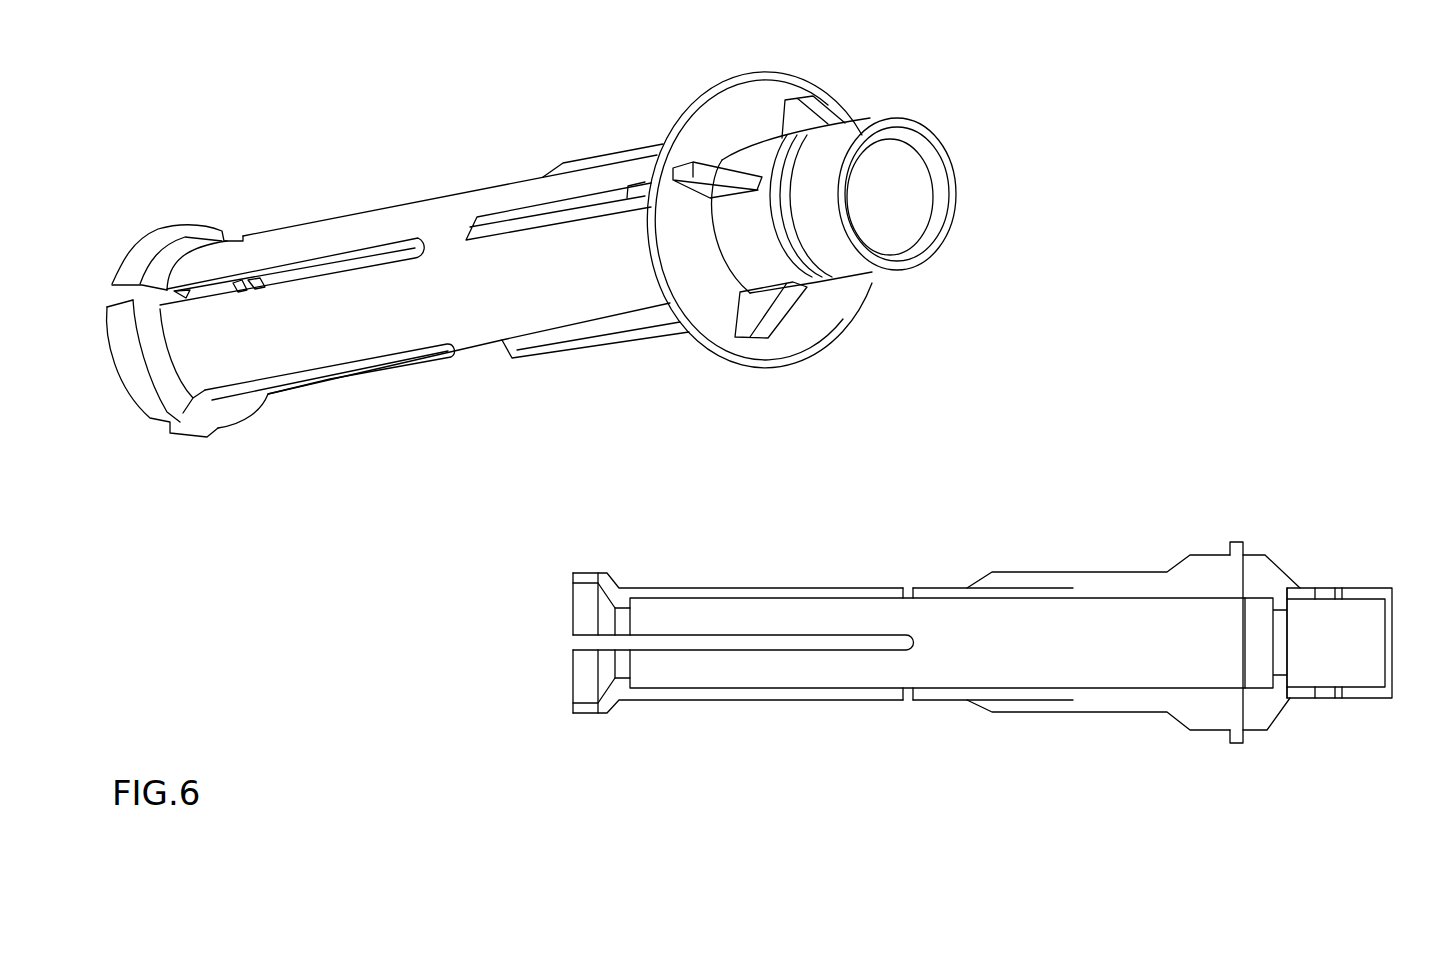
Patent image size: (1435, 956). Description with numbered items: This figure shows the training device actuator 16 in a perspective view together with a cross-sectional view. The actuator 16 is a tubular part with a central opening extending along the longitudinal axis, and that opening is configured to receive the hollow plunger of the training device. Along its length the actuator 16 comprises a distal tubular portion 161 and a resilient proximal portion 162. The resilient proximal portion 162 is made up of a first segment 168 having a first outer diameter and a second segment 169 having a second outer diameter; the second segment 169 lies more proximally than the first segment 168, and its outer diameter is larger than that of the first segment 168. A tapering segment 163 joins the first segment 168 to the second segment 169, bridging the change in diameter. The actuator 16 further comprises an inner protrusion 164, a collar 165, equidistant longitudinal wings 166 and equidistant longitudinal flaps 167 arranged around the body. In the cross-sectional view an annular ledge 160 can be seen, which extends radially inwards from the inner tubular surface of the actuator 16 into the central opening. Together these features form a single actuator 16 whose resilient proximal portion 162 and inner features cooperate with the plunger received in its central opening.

The actuator 16 is at (493, 305).
The annular ledge 160 is at (1262, 657).
The distal tubular portion 161 is at (1397, 580).
The resilient proximal portion 162 is at (957, 737).
The tapering segment 163 is at (222, 229).
The inner protrusion 164 is at (630, 606).
The collar 165 is at (1230, 547).
The longitudinal wings 166 is at (1127, 580).
The longitudinal flaps 167 is at (1260, 573).
The first segment 168 is at (300, 323).
The second segment 169 is at (130, 370).